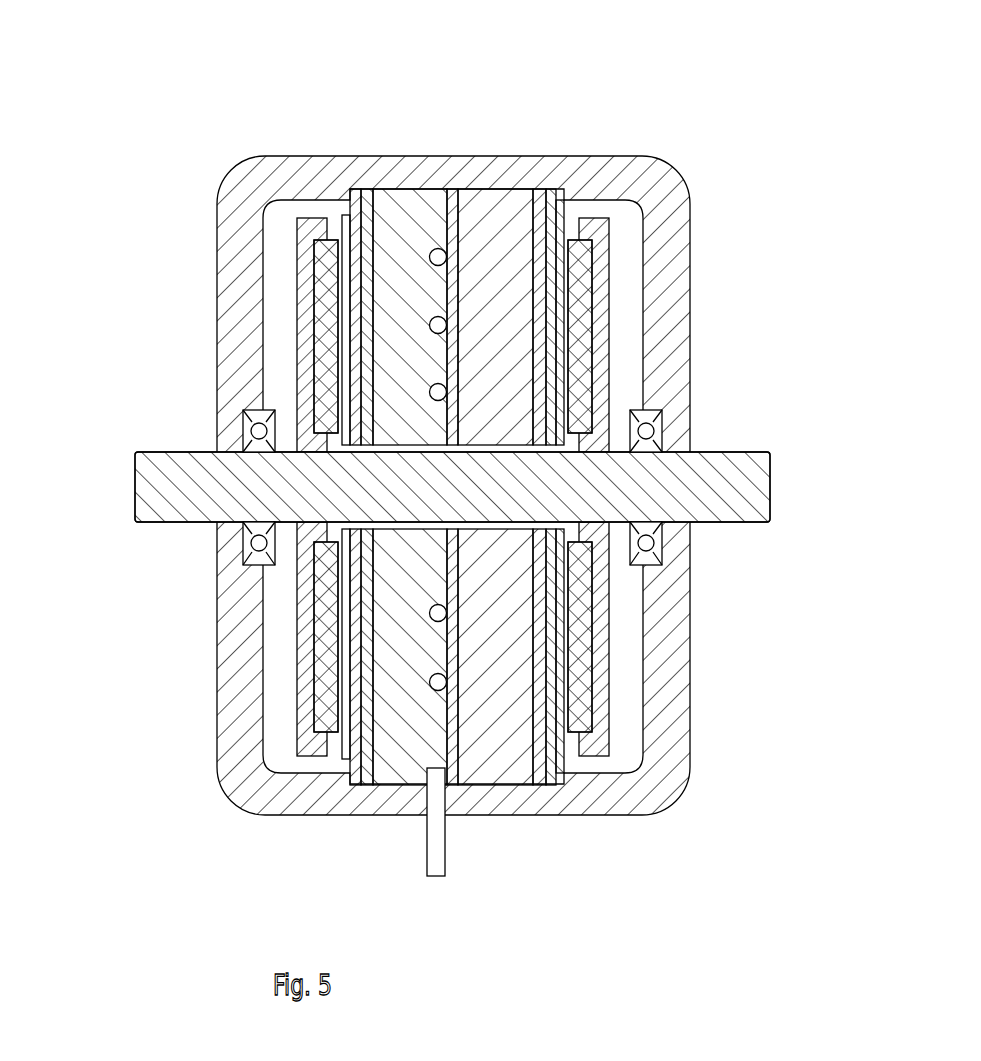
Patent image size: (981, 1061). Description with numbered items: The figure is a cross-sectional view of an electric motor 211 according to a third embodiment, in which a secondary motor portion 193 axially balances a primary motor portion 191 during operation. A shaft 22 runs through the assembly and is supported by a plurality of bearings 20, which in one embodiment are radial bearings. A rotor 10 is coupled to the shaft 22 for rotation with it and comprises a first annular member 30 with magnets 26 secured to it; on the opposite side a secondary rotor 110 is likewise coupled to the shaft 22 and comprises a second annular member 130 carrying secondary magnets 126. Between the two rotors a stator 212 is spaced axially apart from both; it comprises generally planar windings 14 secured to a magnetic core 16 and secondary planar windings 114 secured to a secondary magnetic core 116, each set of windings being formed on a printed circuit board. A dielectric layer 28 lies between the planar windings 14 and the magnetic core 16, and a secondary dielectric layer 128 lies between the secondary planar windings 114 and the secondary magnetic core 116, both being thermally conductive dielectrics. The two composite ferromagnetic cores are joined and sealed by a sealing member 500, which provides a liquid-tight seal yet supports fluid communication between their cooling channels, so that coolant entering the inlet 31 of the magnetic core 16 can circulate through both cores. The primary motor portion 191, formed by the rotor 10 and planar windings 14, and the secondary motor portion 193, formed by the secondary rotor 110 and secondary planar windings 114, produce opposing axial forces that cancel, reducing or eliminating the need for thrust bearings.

The rotor 10 is at (290, 134).
The planar windings 14 is at (290, 168).
The magnetic core 16 is at (388, 189).
The bearings 20 is at (246, 416).
The shaft 22 is at (732, 460).
The magnets 26 is at (322, 328).
The dielectric layer 28 is at (370, 188).
The first annular member 30 is at (308, 273).
The inlet 31 is at (433, 857).
The secondary rotor 110 is at (561, 128).
The secondary planar windings 114 is at (550, 190).
The secondary magnetic core 116 is at (476, 189).
The secondary magnets 126 is at (578, 240).
The secondary dielectric layer 128 is at (537, 190).
The second annular member 130 is at (593, 218).
The primary motor portion 191 is at (318, 144).
The secondary motor portion 193 is at (685, 170).
The motor 211 is at (464, 475).
The stator 212 is at (489, 143).
The sealing member 500 is at (452, 190).